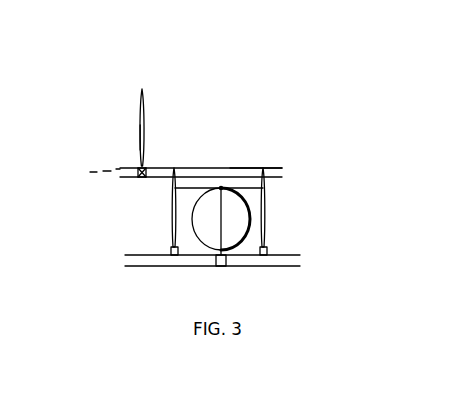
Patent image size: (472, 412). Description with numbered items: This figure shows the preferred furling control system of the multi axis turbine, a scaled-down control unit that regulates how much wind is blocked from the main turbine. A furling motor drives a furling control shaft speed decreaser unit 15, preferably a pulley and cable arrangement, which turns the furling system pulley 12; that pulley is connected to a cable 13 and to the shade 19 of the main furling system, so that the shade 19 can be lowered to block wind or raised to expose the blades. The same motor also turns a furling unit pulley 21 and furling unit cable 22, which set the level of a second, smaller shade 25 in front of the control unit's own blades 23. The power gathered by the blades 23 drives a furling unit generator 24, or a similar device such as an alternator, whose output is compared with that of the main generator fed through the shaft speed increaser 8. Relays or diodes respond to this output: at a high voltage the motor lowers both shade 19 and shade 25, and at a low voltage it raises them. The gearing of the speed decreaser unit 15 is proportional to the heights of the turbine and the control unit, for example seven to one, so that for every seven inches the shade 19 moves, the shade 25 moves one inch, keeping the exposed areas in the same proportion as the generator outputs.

The shaft speed increaser 8 is at (84, 173).
The furling system pulley 12 is at (143, 167).
The cable 13 is at (139, 140).
The furling control shaft speed decreaser unit 15 is at (137, 178).
The shade 19 is at (139, 106).
The furling unit pulley 21 is at (213, 183).
The furling unit cable 22 is at (267, 225).
The blades 23 is at (200, 242).
The furling unit generator 24 is at (225, 265).
The shade 25 is at (240, 170).